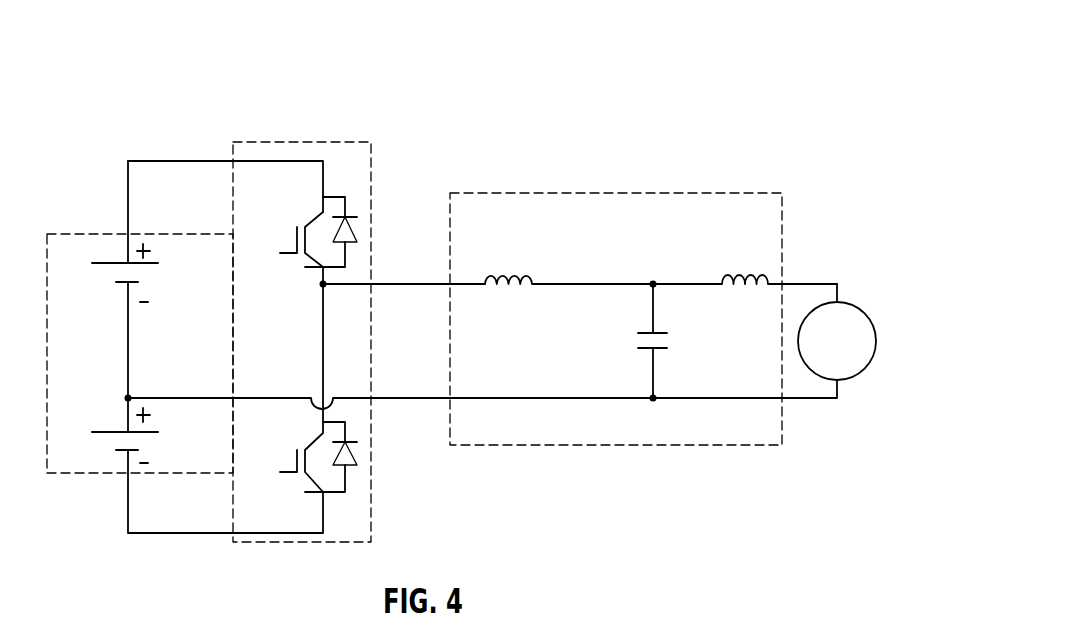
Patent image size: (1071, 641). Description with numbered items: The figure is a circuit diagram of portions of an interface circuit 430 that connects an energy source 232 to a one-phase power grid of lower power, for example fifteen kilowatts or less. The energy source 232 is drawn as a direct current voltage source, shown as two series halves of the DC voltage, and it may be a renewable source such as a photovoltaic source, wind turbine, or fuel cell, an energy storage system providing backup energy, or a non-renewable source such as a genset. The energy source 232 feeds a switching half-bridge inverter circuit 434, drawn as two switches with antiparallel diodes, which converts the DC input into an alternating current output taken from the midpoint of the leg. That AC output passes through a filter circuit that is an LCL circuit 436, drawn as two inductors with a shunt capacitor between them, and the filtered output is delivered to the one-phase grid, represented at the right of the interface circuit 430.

The interface circuit 430 is at (709, 40).
The energy source 232 is at (118, 234).
The switching half-bridge inverter circuit 434 is at (310, 142).
The LCL circuit 436 is at (710, 193).